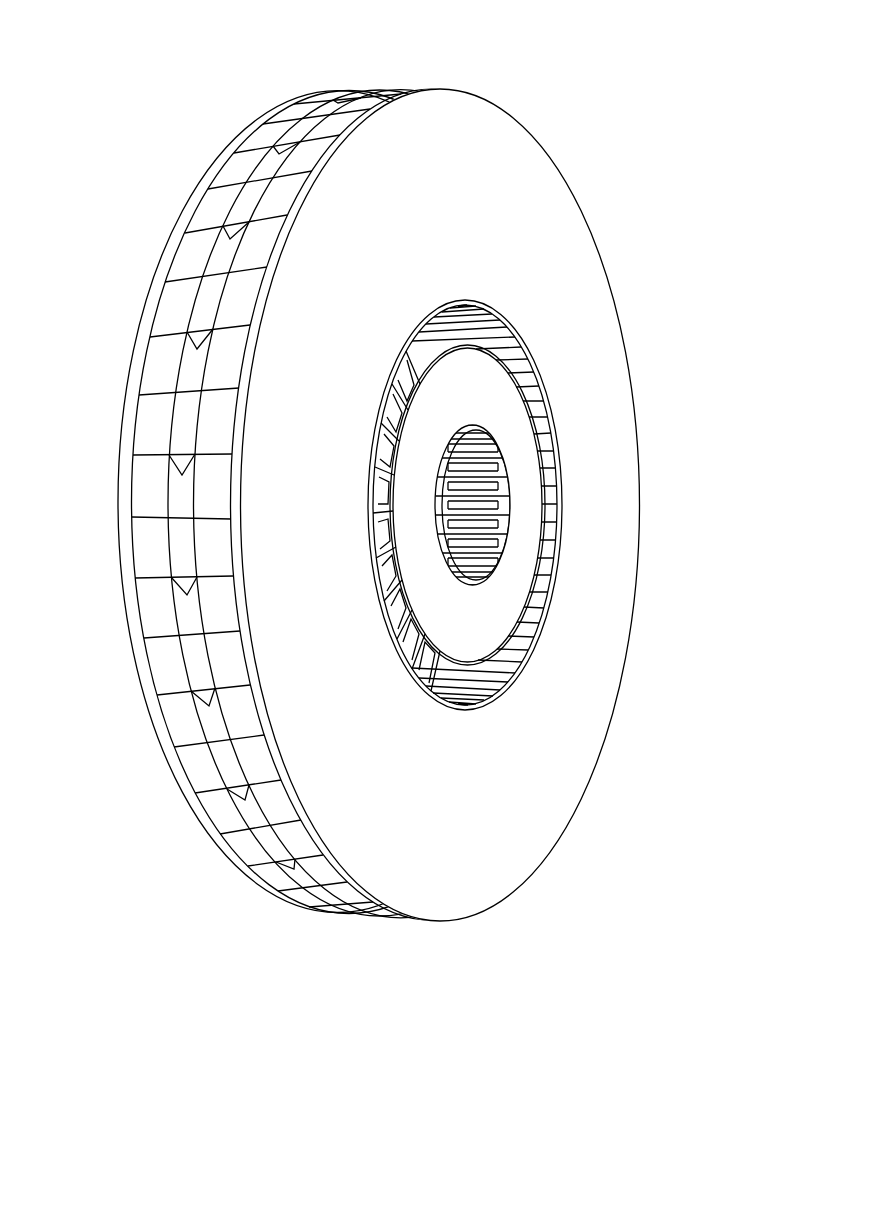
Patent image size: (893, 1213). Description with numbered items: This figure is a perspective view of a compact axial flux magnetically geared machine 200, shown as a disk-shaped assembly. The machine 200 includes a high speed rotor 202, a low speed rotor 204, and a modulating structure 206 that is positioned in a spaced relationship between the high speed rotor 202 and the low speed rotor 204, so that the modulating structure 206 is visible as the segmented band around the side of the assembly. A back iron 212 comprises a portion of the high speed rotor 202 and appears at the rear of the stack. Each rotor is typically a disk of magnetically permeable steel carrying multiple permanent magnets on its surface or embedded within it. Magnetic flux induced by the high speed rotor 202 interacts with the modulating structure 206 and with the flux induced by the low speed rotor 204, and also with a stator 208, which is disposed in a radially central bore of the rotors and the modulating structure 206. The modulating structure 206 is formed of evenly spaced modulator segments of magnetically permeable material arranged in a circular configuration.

The compact axial flux magnetically geared machine 200 is at (631, 60).
The high speed rotor 202 is at (348, 90).
The low speed rotor 204 is at (582, 244).
The modulating structure 206 is at (241, 218).
The stator 208 is at (512, 428).
The back iron 212 is at (127, 489).